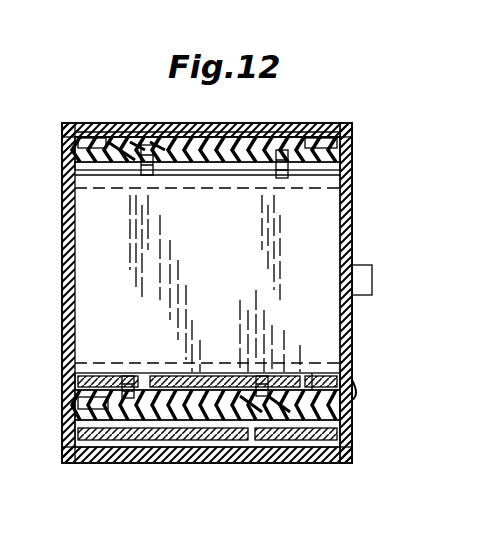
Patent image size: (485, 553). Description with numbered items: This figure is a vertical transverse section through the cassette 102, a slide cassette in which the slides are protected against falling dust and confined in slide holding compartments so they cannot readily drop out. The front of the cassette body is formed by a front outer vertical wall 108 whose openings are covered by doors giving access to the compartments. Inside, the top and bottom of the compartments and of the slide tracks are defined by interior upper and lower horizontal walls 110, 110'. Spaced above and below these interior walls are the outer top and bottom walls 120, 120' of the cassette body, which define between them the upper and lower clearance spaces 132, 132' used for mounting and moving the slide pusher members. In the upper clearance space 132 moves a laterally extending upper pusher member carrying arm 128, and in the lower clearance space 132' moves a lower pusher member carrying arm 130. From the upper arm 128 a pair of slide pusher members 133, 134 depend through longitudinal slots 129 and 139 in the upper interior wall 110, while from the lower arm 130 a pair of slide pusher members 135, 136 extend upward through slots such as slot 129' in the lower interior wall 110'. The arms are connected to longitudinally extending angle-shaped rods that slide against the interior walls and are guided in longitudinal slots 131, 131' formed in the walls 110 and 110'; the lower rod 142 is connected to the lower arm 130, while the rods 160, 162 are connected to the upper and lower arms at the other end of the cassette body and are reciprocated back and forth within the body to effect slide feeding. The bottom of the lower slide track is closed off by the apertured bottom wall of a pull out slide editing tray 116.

The cassette 102 is at (157, 103).
The front outer vertical wall 108 is at (352, 163).
The interior upper horizontal wall 110 is at (207, 271).
The interior lower horizontal wall 110' is at (248, 332).
The pull out slide editing tray 116 is at (362, 392).
The outer top wall 120 is at (206, 126).
The outer bottom wall 120' is at (206, 458).
The upper pusher member carrying arm 128 is at (283, 123).
The longitudinal slot 129 is at (169, 130).
The longitudinal slot 129' is at (286, 360).
The lower pusher member carrying arm 130 is at (200, 463).
The longitudinal slot 131 is at (241, 142).
The longitudinal slot 131' is at (207, 357).
The upper clearance space 132 is at (207, 129).
The lower clearance space 132' is at (207, 435).
The slide pusher member 133 is at (148, 175).
The slide pusher member 134 is at (282, 178).
The slide pusher member 135 is at (138, 385).
The slide pusher member 136 is at (263, 383).
The longitudinal slot 139 is at (118, 186).
The angle-shaped rod 142 is at (77, 408).
The angle-shaped rod 160 is at (125, 123).
The angle-shaped rod 162 is at (318, 380).